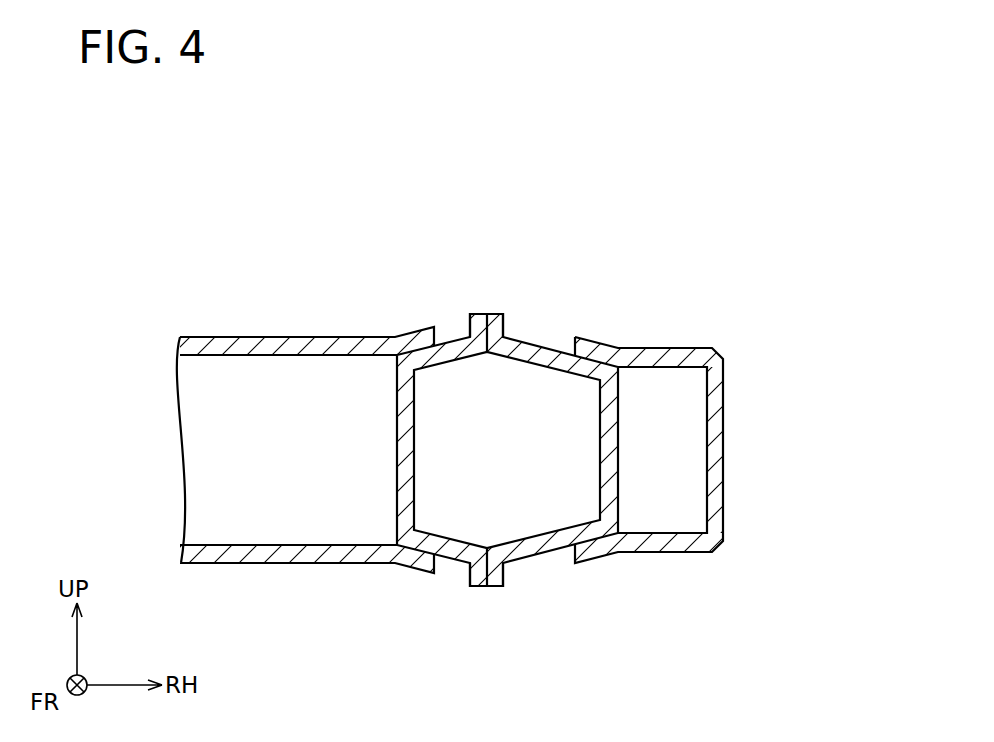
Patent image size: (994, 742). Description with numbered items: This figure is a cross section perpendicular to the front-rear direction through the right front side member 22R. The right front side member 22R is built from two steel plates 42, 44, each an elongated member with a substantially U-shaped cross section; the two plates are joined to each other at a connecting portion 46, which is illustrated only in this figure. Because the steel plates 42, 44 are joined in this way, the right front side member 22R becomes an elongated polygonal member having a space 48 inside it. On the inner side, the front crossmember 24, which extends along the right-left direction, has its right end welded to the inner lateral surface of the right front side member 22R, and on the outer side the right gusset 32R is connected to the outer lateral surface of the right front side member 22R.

The front crossmember 24 is at (300, 557).
The right front side member 22R is at (509, 414).
The steel plate 42 is at (441, 336).
The steel plate 44 is at (538, 345).
The connecting portion 46 is at (505, 328).
The space 48 is at (535, 405).
The right gusset 32R is at (716, 442).